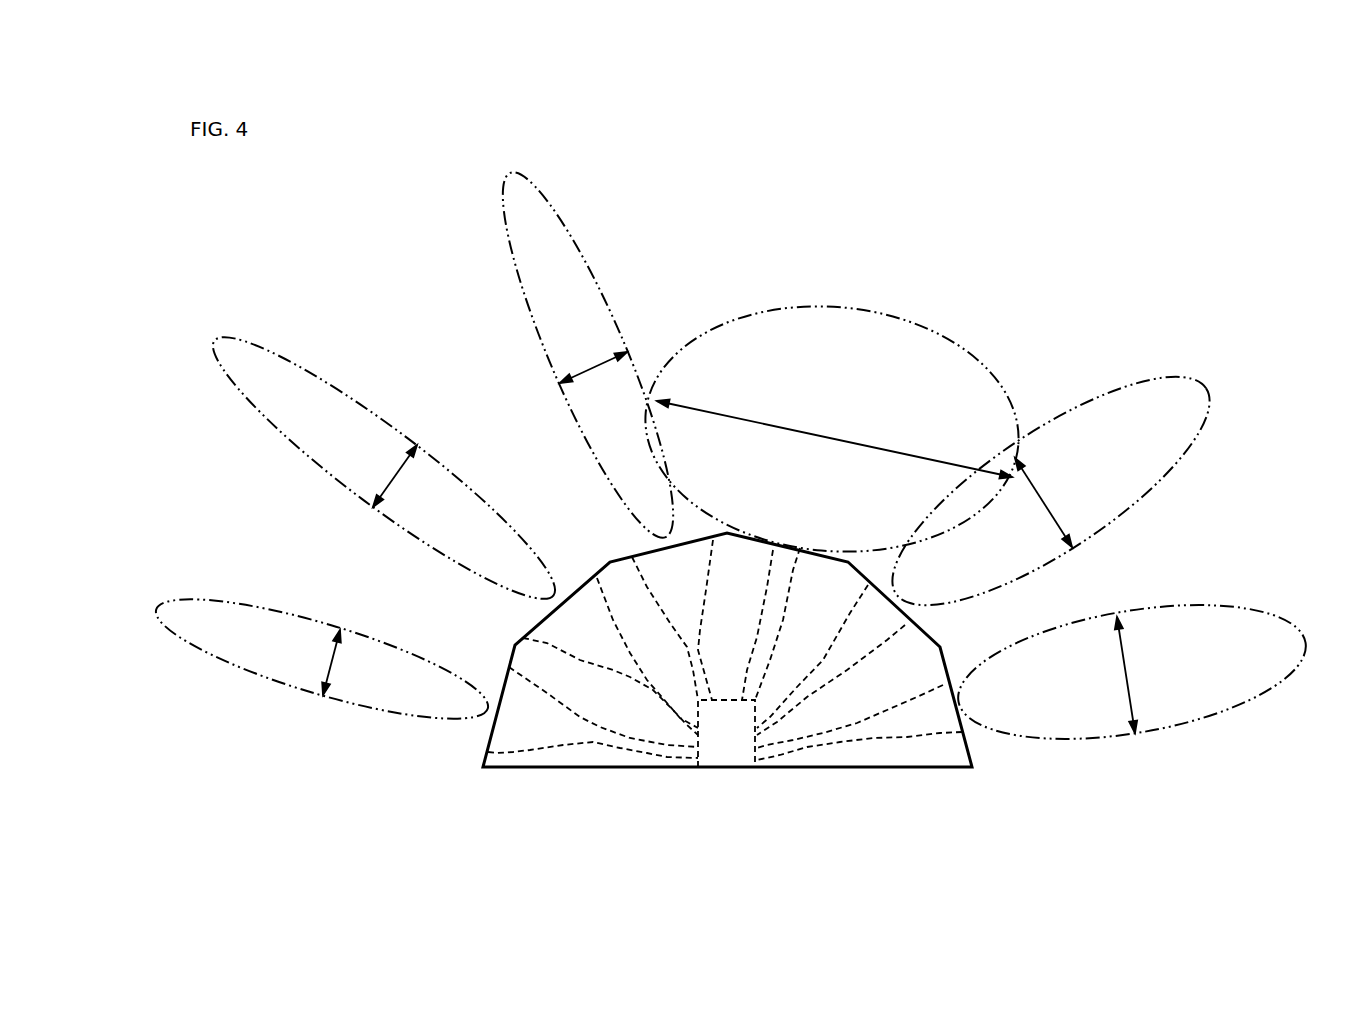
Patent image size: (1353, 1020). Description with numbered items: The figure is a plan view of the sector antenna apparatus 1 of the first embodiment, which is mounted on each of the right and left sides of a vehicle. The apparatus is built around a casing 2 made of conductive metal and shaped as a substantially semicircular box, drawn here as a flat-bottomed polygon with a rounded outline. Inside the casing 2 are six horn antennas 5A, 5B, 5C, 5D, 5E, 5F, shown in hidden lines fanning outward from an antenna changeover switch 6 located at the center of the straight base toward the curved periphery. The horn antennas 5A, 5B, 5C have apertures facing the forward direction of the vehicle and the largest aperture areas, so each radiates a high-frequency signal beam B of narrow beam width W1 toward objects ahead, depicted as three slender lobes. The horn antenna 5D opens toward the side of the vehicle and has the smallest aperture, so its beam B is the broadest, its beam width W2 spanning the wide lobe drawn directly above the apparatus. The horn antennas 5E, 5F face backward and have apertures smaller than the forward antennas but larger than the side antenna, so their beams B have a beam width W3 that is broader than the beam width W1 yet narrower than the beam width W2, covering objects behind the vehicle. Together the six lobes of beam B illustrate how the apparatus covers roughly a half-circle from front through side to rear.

The sector antenna apparatus 1 is at (569, 779).
The casing 2 is at (863, 753).
The antenna changeover switch 6 is at (725, 750).
The horn antenna 5A is at (559, 715).
The horn antenna 5B is at (543, 640).
The horn antenna 5C is at (645, 600).
The horn antenna 5D is at (783, 589).
The horn antenna 5E is at (867, 660).
The horn antenna 5F is at (895, 727).
The high-frequency signal beam B is at (233, 600).
The beam width W1 is at (457, 515).
The beam width W2 is at (834, 439).
The beam width W3 is at (1093, 595).